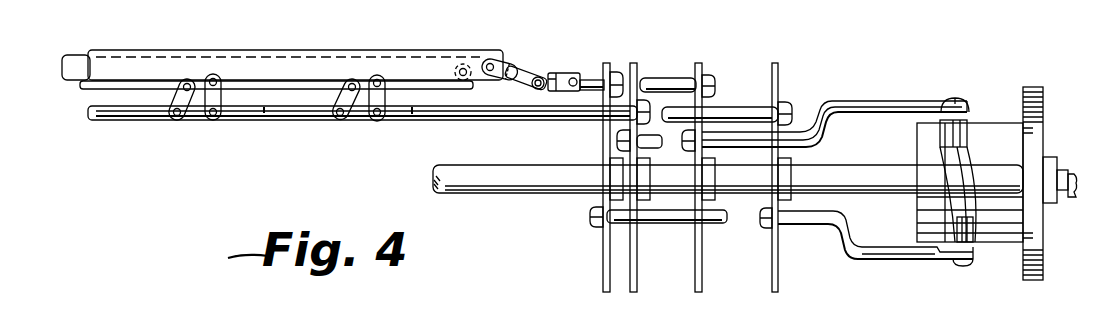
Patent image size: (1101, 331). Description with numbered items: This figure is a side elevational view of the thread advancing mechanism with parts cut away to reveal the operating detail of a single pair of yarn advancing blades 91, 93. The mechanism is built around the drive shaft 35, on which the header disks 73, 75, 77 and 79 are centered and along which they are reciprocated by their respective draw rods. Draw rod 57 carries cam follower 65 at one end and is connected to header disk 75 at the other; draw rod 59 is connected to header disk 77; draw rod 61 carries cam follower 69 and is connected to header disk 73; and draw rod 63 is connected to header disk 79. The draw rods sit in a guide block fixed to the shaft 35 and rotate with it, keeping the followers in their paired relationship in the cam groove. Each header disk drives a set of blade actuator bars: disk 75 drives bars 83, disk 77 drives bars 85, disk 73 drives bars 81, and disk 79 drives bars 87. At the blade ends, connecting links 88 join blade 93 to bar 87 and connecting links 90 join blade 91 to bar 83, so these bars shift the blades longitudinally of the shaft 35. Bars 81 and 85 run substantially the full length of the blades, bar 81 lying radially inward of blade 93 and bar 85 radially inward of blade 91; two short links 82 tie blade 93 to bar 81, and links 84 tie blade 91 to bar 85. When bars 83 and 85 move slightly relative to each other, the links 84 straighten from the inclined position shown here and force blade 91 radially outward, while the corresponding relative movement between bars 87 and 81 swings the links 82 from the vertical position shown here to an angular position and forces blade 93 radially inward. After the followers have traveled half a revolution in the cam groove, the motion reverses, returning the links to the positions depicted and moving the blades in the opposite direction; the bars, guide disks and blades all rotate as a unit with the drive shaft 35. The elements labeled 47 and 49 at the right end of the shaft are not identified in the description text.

The drive shaft 35 is at (858, 183).
The housing 47 is at (990, 132).
The flange disc 49 is at (1043, 105).
The draw rod 57 is at (900, 102).
The draw rod 59 is at (652, 143).
The draw rod 61 is at (890, 255).
The draw rod 63 is at (714, 224).
The cam follower 65 is at (940, 131).
The cam follower 69 is at (973, 242).
The header disk 73 is at (778, 289).
The header disk 75 is at (699, 288).
The header disk 77 is at (634, 288).
The header disk 79 is at (603, 287).
The blade actuator bar 81 is at (402, 113).
The short link 82 is at (222, 95).
The blade actuator bar 83 is at (548, 91).
The link 84 is at (174, 97).
The blade actuator bar 85 is at (511, 115).
The blade actuator bar 87 is at (592, 78).
The connecting link 88 is at (508, 60).
The connecting link 90 is at (518, 84).
The yarn advancing blade 91 is at (69, 57).
The yarn advancing blade 93 is at (107, 50).